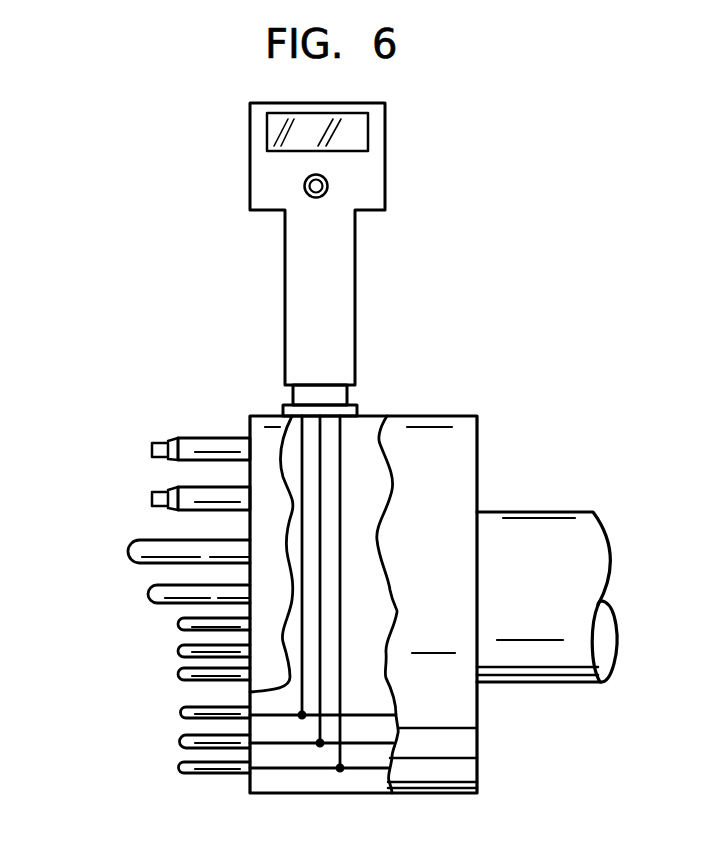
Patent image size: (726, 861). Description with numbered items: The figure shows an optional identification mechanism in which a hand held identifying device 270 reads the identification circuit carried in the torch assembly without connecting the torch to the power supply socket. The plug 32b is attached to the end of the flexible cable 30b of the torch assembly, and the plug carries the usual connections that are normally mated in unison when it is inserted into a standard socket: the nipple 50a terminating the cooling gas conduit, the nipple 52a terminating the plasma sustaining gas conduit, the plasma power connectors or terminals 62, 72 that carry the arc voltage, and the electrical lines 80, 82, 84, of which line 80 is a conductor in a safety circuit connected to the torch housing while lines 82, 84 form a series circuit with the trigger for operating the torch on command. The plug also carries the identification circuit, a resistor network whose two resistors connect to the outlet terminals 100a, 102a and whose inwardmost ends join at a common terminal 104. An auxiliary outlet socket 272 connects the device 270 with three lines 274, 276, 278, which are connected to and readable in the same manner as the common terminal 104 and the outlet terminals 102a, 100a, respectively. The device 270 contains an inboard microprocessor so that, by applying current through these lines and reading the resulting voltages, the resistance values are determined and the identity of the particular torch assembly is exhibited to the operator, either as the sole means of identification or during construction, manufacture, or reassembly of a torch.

The hand held identifying device 270 is at (387, 172).
The auxiliary outlet socket 272 is at (287, 410).
The line 274 is at (295, 445).
The line 276 is at (340, 490).
The line 278 is at (322, 453).
The plug 32b is at (457, 427).
The flexible cable 30b is at (561, 518).
The nipple 50a is at (186, 447).
The nipple 52a is at (197, 496).
The connector or terminal 62 is at (150, 548).
The connector or terminal 72 is at (155, 593).
The electrical line 80 is at (182, 623).
The electrical line 82 is at (183, 650).
The electrical line 84 is at (183, 674).
The common terminal 104 is at (187, 710).
The outlet terminal 100a is at (185, 741).
The outlet terminal 102a is at (200, 775).